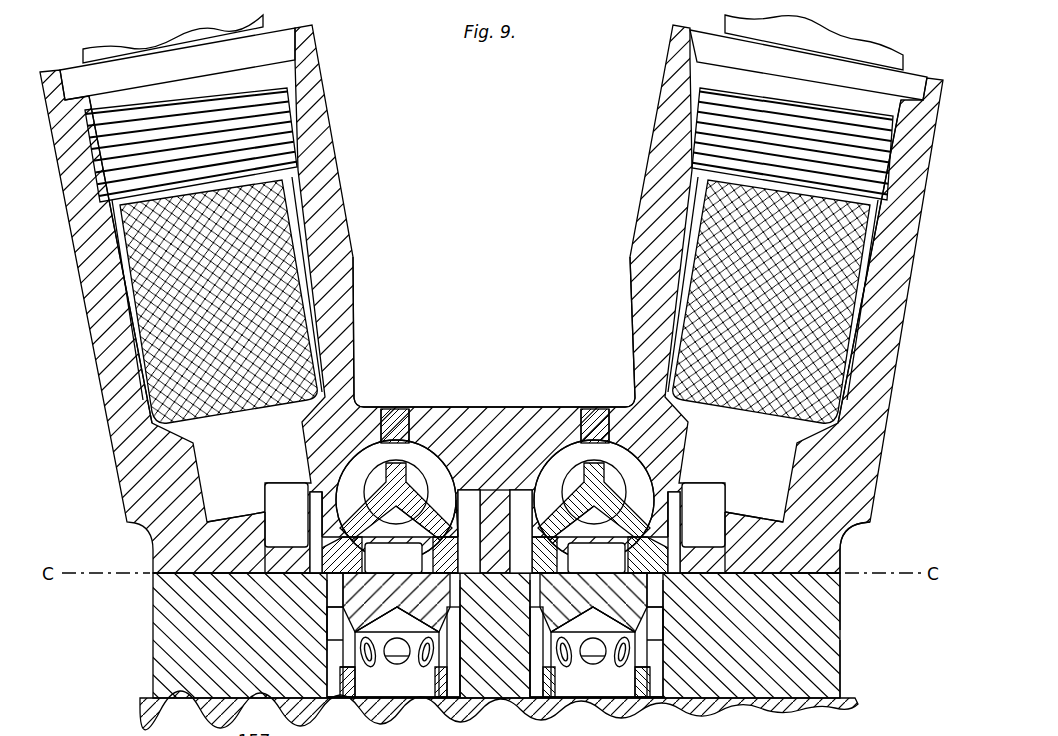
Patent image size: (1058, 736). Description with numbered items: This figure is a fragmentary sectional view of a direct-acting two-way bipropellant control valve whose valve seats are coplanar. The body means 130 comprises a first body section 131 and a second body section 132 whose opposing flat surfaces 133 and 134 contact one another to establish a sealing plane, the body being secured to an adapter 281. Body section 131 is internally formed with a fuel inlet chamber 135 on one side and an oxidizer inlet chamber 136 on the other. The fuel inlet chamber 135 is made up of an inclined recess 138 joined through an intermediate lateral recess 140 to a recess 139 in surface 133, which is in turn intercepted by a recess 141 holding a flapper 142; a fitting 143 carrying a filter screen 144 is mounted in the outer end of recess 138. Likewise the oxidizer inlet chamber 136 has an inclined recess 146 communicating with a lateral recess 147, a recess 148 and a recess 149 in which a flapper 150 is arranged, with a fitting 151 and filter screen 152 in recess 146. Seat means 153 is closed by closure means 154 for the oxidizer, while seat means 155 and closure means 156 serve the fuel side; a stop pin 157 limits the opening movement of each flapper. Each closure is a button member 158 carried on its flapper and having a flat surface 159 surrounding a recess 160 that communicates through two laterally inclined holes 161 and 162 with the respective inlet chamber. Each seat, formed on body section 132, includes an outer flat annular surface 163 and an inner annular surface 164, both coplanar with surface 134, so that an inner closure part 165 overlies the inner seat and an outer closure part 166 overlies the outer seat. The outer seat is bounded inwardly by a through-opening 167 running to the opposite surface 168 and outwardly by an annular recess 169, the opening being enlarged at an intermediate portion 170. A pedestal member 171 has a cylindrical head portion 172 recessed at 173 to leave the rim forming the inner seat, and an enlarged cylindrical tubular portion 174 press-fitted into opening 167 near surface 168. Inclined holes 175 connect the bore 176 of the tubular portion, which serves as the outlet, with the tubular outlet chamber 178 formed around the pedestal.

The body means 130 is at (491, 292).
The first body section 131 is at (862, 507).
The second body section 132 is at (841, 633).
The flat surface 133 is at (847, 557).
The flat surface 134 is at (840, 600).
The fuel inlet chamber 135 is at (703, 515).
The oxidizer inlet chamber 136 is at (286, 515).
The inclined recess 138 is at (850, 395).
The recess 139 is at (519, 486).
The lateral recess 140 is at (747, 544).
The recess 141 is at (564, 471).
The flapper 142 is at (549, 442).
The fitting 143 is at (826, 46).
The filter screen 144 is at (655, 220).
The inclined recess 146 is at (148, 388).
The lateral recess 147 is at (244, 536).
The recess 148 is at (458, 486).
The recess 149 is at (429, 448).
The flapper 150 is at (417, 443).
The fitting 151 is at (130, 45).
The filter screen 152 is at (318, 221).
The seat means 153 is at (310, 605).
The closure means 154 is at (337, 530).
The seat means 155 is at (692, 600).
The closure means 156 is at (658, 532).
The stop pin 157 is at (390, 409).
The button member 158 is at (312, 534).
The flat surface 159 is at (495, 555).
The recess 160 is at (495, 558).
The laterally inclined hole 161 is at (377, 524).
The laterally inclined hole 162 is at (438, 520).
The outer flat annular surface 163 is at (475, 560).
The inner annular surface 164 is at (495, 608).
The inner closure part 165 is at (461, 598).
The outer closure part 166 is at (318, 562).
The through-opening 167 is at (462, 620).
The surface 168 is at (835, 668).
The annular recess 169 is at (300, 578).
The enlarged portion 170 is at (327, 650).
The pedestal member 171 is at (466, 645).
The cylindrical head portion 172 is at (326, 620).
The recess 173 is at (495, 592).
The cylindrical tubular portion 174 is at (345, 682).
The inclined holes 175 is at (397, 666).
The bore 176 is at (385, 698).
The tubular outlet chamber 178 is at (325, 668).
The adapter 281 is at (843, 708).